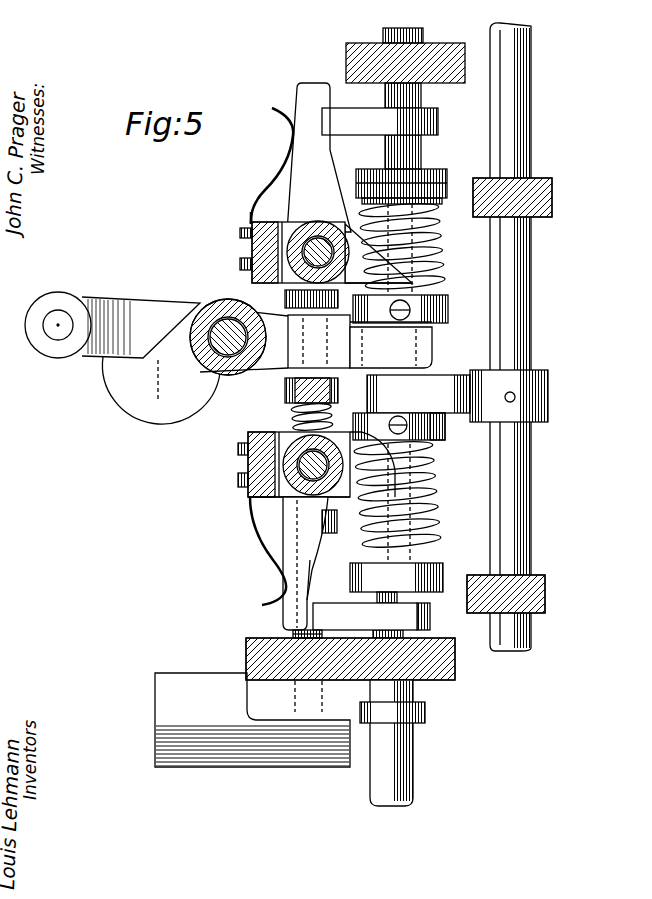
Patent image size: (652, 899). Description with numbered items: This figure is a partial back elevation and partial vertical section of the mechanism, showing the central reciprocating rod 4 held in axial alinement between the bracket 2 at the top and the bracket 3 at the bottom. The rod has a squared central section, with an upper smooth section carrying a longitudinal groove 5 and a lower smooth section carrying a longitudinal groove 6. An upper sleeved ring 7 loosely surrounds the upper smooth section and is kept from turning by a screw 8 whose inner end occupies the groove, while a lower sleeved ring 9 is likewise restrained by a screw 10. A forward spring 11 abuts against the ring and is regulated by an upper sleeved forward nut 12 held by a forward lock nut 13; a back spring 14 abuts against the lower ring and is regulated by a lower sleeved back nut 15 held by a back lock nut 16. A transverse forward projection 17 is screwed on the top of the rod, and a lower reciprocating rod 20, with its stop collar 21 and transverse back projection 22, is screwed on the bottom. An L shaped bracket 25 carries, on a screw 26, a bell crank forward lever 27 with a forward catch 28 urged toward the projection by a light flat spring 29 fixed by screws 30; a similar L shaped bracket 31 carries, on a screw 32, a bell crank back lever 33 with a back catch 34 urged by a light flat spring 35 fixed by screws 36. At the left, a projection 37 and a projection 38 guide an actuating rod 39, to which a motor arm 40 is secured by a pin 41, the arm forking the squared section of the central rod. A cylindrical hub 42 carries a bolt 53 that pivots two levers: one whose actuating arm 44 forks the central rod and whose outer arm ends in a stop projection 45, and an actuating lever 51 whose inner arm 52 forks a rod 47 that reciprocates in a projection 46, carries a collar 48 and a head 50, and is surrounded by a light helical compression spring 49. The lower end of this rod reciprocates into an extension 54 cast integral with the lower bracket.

The bracket 2 is at (432, 50).
The bracket 3 is at (457, 660).
The central reciprocating rod 4 is at (432, 372).
The longitudinal groove 5 is at (425, 258).
The longitudinal groove 6 is at (425, 461).
The upper sleeved ring 7 is at (449, 306).
The screw 8 is at (432, 323).
The lower sleeved ring 9 is at (447, 428).
The screw 10 is at (440, 433).
The forward spring 11 is at (440, 232).
The upper sleeved forward nut 12 is at (436, 198).
The forward lock nut 13 is at (447, 180).
The back spring 14 is at (437, 516).
The lower sleeved back nut 15 is at (445, 568).
The back lock nut 16 is at (432, 600).
The transverse forward projection 17 is at (380, 121).
The lower reciprocating rod 20 is at (415, 781).
The stop collar 21 is at (427, 712).
The transverse back projection 22 is at (365, 616).
The L shaped bracket 25 is at (250, 280).
The screw 26 is at (251, 215).
The bell crank forward lever 27 is at (362, 243).
The forward catch 28 is at (318, 92).
The light flat spring 29 is at (290, 126).
The screws 30 is at (240, 233).
The L shaped bracket 31 is at (265, 440).
The screw 32 is at (250, 497).
The bell crank back lever 33 is at (297, 517).
The back catch 34 is at (300, 612).
The light flat spring 35 is at (272, 560).
The screws 36 is at (238, 448).
The projection 37 is at (553, 205).
The projection 38 is at (546, 592).
The actuating rod 39 is at (534, 103).
The motor arm 40 is at (550, 380).
The pin 41 is at (516, 400).
The cylindrical hub 42 is at (225, 322).
The actuating arm 44 is at (391, 347).
The stop projection 45 is at (118, 368).
The projection 46 is at (285, 395).
The rod 47 is at (320, 582).
The collar 48 is at (337, 520).
The light helical compression spring 49 is at (330, 408).
The head 50 is at (285, 298).
The actuating lever 51 is at (48, 300).
The inner arm 52 is at (290, 372).
The bolt 53 is at (213, 377).
The extension 54 is at (190, 700).